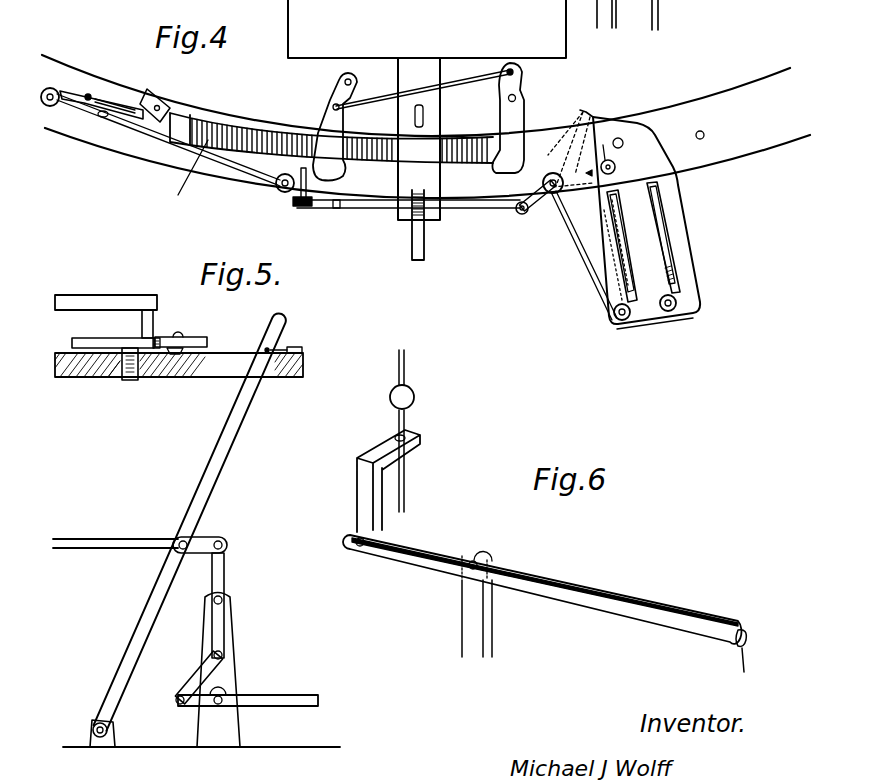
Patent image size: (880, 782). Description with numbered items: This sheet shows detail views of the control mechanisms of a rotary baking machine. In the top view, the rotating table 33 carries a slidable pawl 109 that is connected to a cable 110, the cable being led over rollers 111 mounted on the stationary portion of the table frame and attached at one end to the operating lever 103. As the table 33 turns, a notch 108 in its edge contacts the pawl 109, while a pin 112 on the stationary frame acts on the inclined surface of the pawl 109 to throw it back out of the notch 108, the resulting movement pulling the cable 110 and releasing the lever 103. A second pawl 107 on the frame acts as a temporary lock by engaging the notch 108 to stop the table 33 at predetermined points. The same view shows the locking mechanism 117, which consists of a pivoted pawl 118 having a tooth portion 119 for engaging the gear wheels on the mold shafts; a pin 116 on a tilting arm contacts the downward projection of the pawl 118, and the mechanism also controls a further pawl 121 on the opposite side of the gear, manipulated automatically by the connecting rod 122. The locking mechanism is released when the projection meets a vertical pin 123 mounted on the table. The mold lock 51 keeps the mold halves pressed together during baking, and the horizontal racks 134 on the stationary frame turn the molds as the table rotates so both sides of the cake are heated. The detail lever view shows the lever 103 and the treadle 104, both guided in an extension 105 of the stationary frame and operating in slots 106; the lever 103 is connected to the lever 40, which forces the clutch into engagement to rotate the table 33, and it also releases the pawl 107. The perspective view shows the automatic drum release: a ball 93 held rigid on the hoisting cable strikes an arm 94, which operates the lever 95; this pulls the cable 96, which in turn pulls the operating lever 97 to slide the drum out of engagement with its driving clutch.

In FIG. 5, the table 33 is at (121, 302).
In FIG. 5, the lever 40 is at (97, 543).
In FIG. 4, the mold lock 51 is at (425, 238).
In FIG. 6, the ball 93 is at (415, 392).
In FIG. 6, the arm 94 is at (423, 435).
In FIG. 6, the lever 95 is at (437, 550).
In FIG. 6, the cable 96 is at (748, 659).
In FIG. 4, the operating lever 97 is at (620, 257).
In FIG. 4, the lever 103 is at (677, 263).
In FIG. 5, the lever 103 is at (236, 448).
In FIG. 5, the treadle 104 is at (303, 696).
In FIG. 4, the extension 105 is at (690, 237).
In FIG. 4, the slots 106 is at (670, 217).
In FIG. 4, the pawl 107 is at (647, 147).
In FIG. 5, the pawl 107 is at (200, 322).
In FIG. 4, the notch 108 is at (160, 92).
In FIG. 4, the pawl 109 is at (120, 97).
In FIG. 4, the cable 110 is at (120, 132).
In FIG. 4, the rollers 111 is at (283, 190).
In FIG. 5, the rollers 111 is at (294, 348).
In FIG. 4, the pin 112 is at (162, 108).
In FIG. 4, the pin 116 is at (304, 200).
In FIG. 4, the locking mechanism 117 is at (327, 127).
In FIG. 4, the pivoted pawl 118 is at (333, 108).
In FIG. 4, the tooth portion 119 is at (345, 170).
In FIG. 4, the pawl 121 is at (516, 115).
In FIG. 4, the connecting rod 122 is at (462, 81).
In FIG. 4, the vertical pin 123 is at (705, 135).
In FIG. 4, the horizontal racks 134 is at (184, 176).